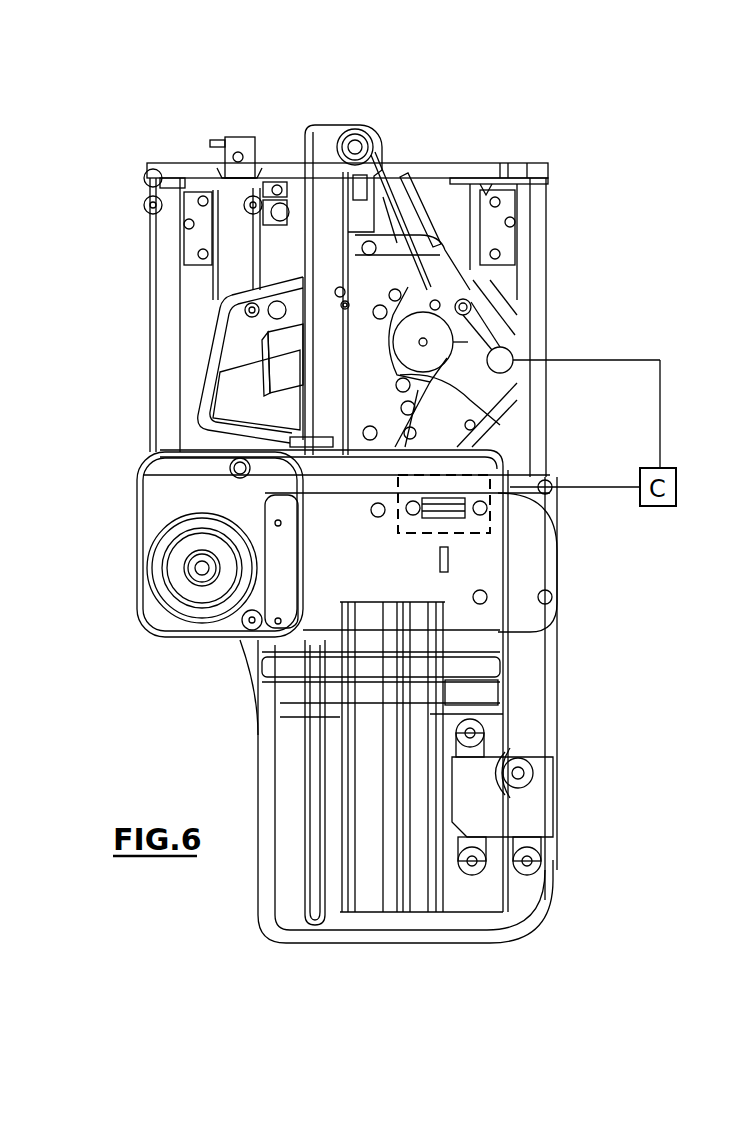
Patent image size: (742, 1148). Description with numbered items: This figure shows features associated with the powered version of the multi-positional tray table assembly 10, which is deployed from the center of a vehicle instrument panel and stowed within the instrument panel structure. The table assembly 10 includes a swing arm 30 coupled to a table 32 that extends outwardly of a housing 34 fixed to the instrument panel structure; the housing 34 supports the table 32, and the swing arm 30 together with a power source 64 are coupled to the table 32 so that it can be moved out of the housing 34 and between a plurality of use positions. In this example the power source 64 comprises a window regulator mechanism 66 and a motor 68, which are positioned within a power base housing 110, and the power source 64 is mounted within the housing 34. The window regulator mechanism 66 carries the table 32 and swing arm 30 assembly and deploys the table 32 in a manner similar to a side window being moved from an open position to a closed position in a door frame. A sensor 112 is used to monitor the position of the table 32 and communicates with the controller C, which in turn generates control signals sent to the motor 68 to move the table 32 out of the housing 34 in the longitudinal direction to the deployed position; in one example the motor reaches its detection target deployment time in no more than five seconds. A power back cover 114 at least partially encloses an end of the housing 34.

The table assembly 10 is at (98, 434).
The swing arm 30 is at (236, 622).
The table 32 is at (555, 735).
The housing 34 is at (237, 237).
The power source 64 is at (540, 343).
The window regulator mechanism 66 is at (378, 277).
The motor 68 is at (487, 432).
The power base housing 110 is at (217, 340).
The sensor 112 is at (458, 533).
The power back cover 114 is at (505, 160).